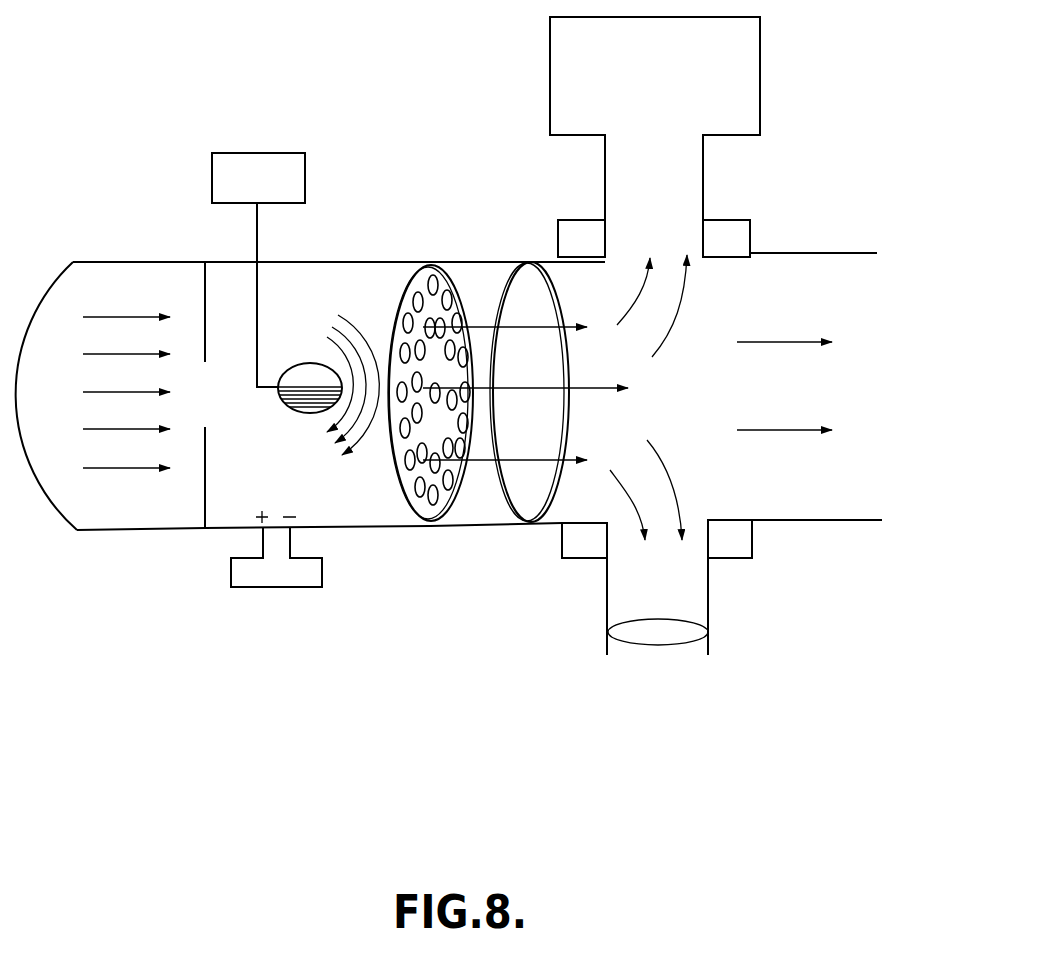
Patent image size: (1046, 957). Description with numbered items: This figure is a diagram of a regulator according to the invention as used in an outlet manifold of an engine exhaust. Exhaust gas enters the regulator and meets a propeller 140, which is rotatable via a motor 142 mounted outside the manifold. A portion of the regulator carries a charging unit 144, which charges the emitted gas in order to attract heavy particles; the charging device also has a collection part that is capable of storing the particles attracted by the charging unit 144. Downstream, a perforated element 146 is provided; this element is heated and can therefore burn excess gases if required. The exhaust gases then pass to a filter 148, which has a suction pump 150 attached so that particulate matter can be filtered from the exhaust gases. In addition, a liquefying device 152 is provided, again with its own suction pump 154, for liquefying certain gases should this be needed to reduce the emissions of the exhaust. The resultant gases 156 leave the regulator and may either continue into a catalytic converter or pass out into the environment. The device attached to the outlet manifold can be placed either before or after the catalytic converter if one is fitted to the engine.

The propeller 140 is at (302, 373).
The motor 142 is at (238, 177).
The charging unit 144 is at (245, 578).
The perforated element 146 is at (430, 478).
The filter 148 is at (662, 590).
The suction pump 150 is at (578, 543).
The liquefying device 152 is at (668, 213).
The suction pump 154 is at (578, 235).
The resultant gases 156 is at (762, 342).